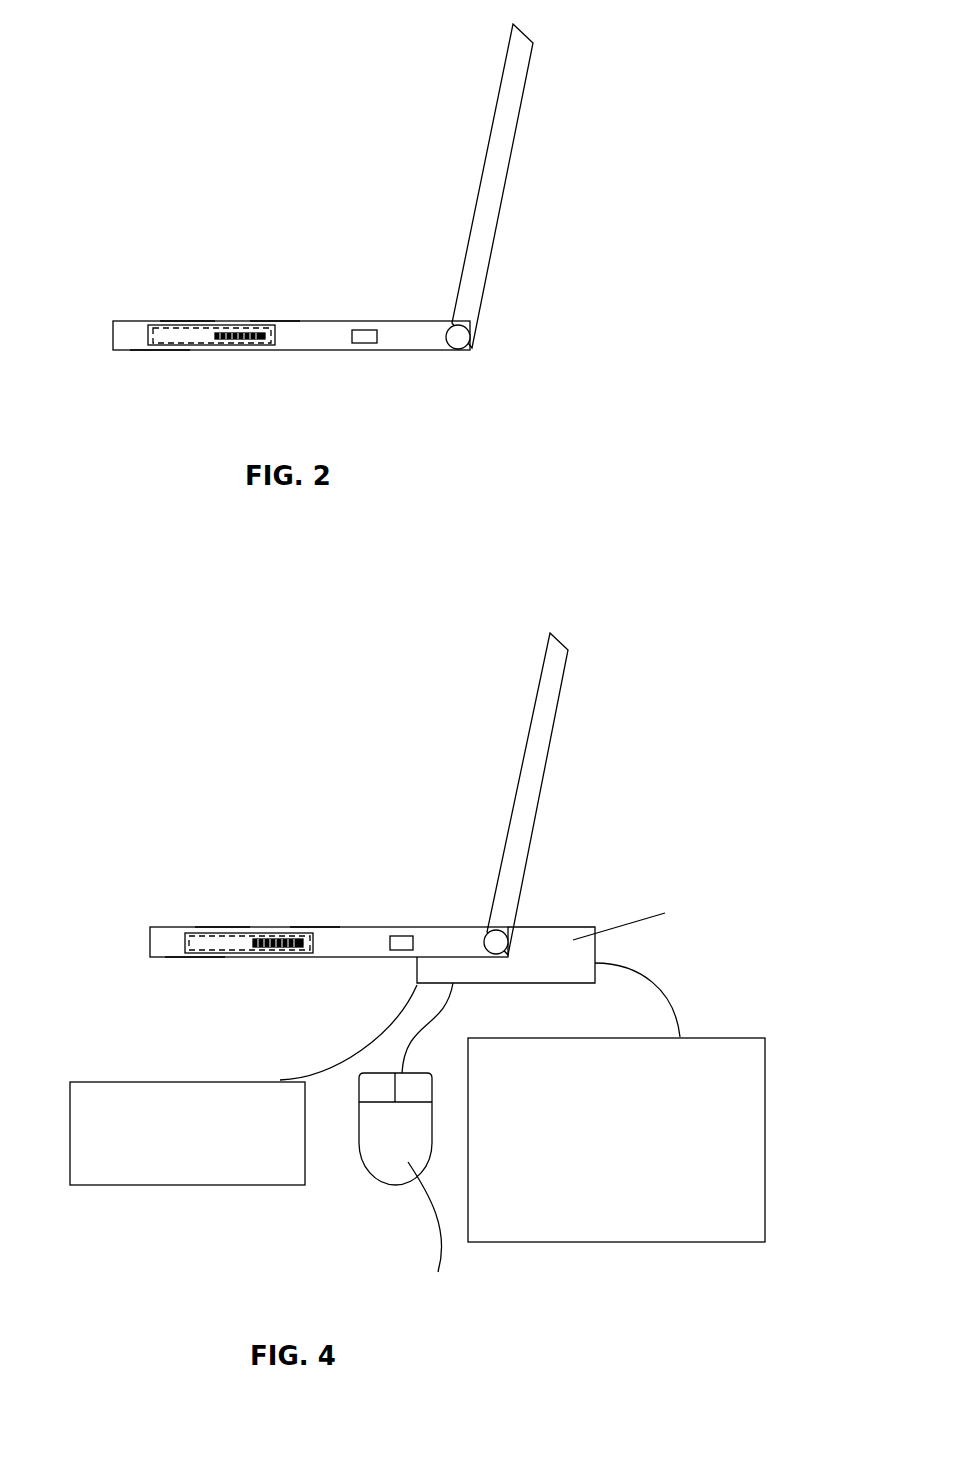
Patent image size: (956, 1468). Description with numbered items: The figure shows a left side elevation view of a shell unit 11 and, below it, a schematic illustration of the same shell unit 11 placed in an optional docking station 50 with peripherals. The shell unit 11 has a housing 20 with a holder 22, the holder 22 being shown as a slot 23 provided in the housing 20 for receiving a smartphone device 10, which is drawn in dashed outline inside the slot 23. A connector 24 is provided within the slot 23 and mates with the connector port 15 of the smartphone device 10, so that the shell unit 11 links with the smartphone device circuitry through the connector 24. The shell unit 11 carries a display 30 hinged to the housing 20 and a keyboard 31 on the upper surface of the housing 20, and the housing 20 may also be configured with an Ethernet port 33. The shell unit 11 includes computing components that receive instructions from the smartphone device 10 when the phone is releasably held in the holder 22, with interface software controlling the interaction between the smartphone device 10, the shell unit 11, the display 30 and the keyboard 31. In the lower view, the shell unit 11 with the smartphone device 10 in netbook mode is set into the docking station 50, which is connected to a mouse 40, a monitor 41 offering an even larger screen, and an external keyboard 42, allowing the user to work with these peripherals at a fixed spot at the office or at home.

In FIG. 2, the smartphone device 10 is at (235, 326).
In FIG. 4, the smartphone device 10 is at (272, 934).
In FIG. 2, the shell unit 11 is at (152, 173).
In FIG. 4, the shell unit 11 is at (563, 783).
In FIG. 2, the connector port 15 is at (267, 347).
In FIG. 4, the connector port 15 is at (300, 948).
In FIG. 2, the housing 20 is at (432, 340).
In FIG. 2, the holder 22 is at (160, 350).
In FIG. 4, the holder 22 is at (195, 957).
In FIG. 2, the slot 23 is at (188, 321).
In FIG. 4, the slot 23 is at (227, 927).
In FIG. 2, the connector 24 is at (262, 338).
In FIG. 4, the connector 24 is at (290, 940).
In FIG. 2, the shell unit display 30 is at (482, 172).
In FIG. 4, the shell unit display 30 is at (520, 780).
In FIG. 2, the keyboard 31 is at (278, 320).
In FIG. 4, the keyboard 31 is at (315, 927).
In FIG. 2, the Ethernet port 33 is at (370, 346).
In FIG. 4, the Ethernet port 33 is at (398, 951).
In FIG. 4, the mouse 40 is at (382, 1183).
In FIG. 4, the monitor 41 is at (725, 1037).
In FIG. 4, the keyboard 42 is at (125, 1080).
In FIG. 4, the docking station 50 is at (552, 927).